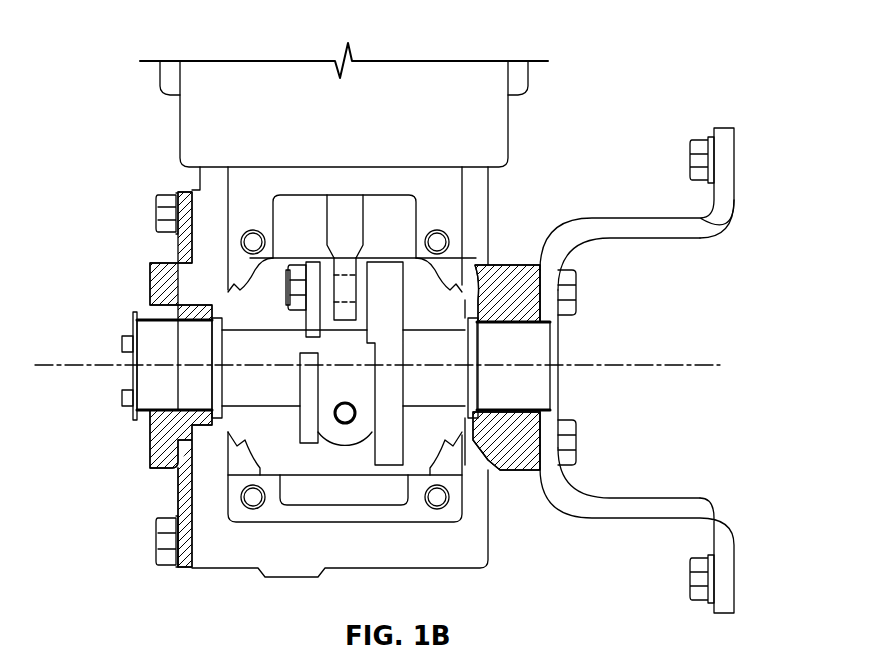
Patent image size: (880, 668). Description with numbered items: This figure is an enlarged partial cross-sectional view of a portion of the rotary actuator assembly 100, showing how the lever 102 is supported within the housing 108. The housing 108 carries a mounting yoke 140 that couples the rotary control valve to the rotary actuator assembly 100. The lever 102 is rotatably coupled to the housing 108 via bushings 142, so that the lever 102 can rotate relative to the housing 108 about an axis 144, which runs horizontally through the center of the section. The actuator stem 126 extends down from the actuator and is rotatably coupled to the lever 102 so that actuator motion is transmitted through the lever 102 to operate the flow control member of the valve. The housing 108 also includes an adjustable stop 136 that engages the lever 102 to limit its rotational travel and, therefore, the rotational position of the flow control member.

The rotary actuator assembly 100 is at (118, 40).
The lever 102 is at (245, 392).
The housing 108 is at (210, 570).
The actuator stem 126 is at (322, 200).
The adjustable stop 136 is at (345, 290).
The mounting yoke 140 is at (735, 163).
The bushings 142 is at (167, 318).
The axis 144 is at (688, 366).